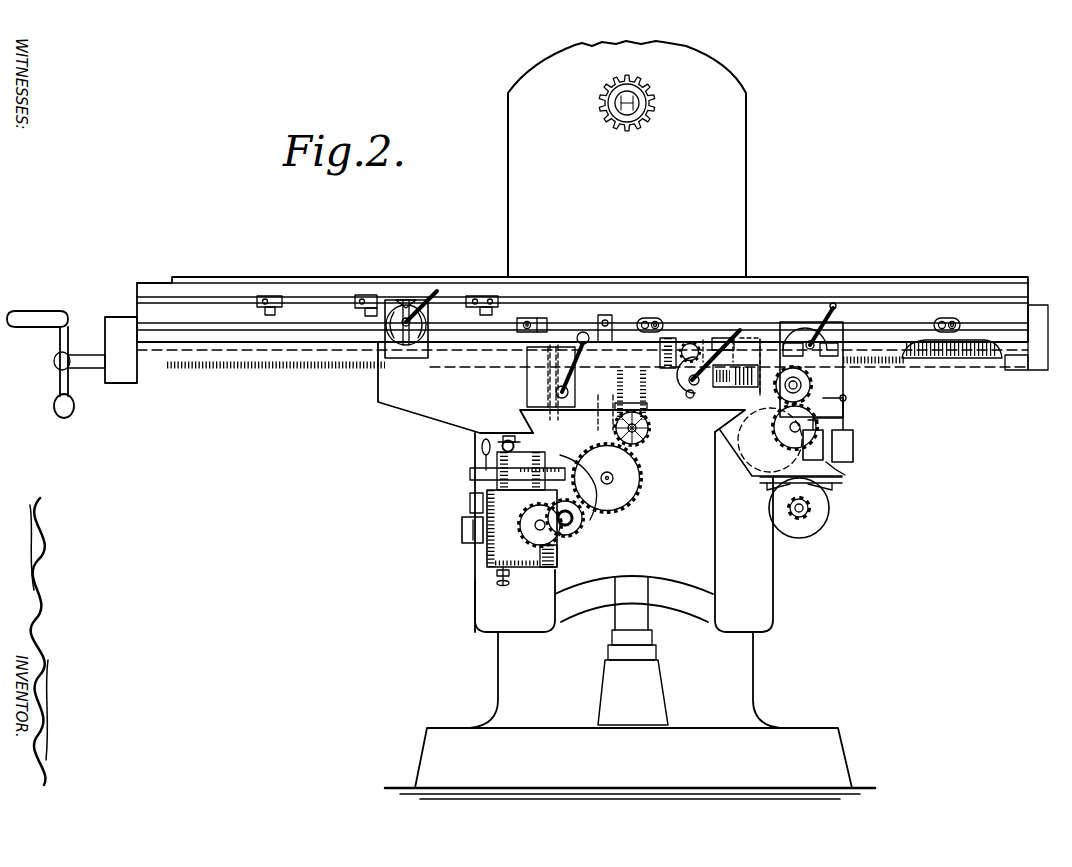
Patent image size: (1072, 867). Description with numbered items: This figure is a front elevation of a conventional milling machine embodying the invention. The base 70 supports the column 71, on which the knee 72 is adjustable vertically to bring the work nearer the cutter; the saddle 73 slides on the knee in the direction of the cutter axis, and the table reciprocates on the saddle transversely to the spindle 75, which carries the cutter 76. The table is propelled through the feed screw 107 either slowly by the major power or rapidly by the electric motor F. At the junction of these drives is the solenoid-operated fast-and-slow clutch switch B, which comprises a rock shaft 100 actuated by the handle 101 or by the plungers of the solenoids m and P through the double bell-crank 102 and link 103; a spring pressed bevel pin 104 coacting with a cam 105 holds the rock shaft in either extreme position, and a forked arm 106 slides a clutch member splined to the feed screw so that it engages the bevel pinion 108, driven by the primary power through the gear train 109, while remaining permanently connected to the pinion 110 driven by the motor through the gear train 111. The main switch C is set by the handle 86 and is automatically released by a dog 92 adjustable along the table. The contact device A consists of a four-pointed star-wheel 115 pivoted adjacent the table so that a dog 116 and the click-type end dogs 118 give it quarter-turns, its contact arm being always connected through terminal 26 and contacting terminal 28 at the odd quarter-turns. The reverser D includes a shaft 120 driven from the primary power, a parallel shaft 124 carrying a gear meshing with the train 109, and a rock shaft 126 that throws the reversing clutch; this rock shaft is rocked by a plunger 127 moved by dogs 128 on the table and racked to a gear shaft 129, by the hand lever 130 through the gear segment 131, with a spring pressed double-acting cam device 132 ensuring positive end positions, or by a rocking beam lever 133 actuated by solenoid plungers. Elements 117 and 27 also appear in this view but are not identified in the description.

The base 70 is at (816, 728).
The column 71 is at (508, 183).
The knee 72 is at (773, 602).
The saddle 73 is at (436, 418).
The spindle 75 is at (600, 103).
The cutter 76 is at (655, 103).
The handle 86 is at (836, 316).
The dog 92 is at (645, 318).
The rock shaft 100 is at (684, 398).
The handle 101 is at (758, 338).
The double bell-crank 102 is at (846, 399).
The link 103 is at (783, 400).
The spring pressed bevel pin 104 is at (728, 390).
The cam 105 is at (704, 420).
The forked arm 106 is at (720, 338).
The feed screw 107 is at (950, 362).
The bevel pinion 108 is at (674, 369).
The gear train 109 is at (612, 380).
The pinion 110 is at (790, 322).
The gear train 111 is at (776, 439).
The four-pointed star-wheel 115 is at (428, 314).
The dog 116 is at (358, 309).
The stop 117 is at (399, 296).
The dogs 118 is at (263, 308).
The shaft 120 is at (495, 552).
The second parallel shaft 124 is at (590, 530).
The rock shaft 126 is at (632, 500).
The plunger 127 is at (567, 455).
The dogs 128 is at (602, 316).
The gear shaft 129 is at (497, 471).
The hand lever 130 is at (480, 449).
The gear segment 131 is at (470, 486).
The spring pressed double-acting cam device 132 is at (503, 586).
The rocking beam lever 133 is at (472, 502).
The terminal 26 is at (392, 345).
The clutch shaft 27 is at (418, 348).
The terminal 28 is at (414, 300).
The contact device A is at (401, 272).
The solenoid-operated fast-and-slow clutch switch B is at (690, 272).
The main switch C is at (826, 272).
The solenoid-operated reverser D is at (433, 540).
The electric motor F is at (812, 532).
The solenoid P is at (855, 446).
The solenoid m is at (845, 475).